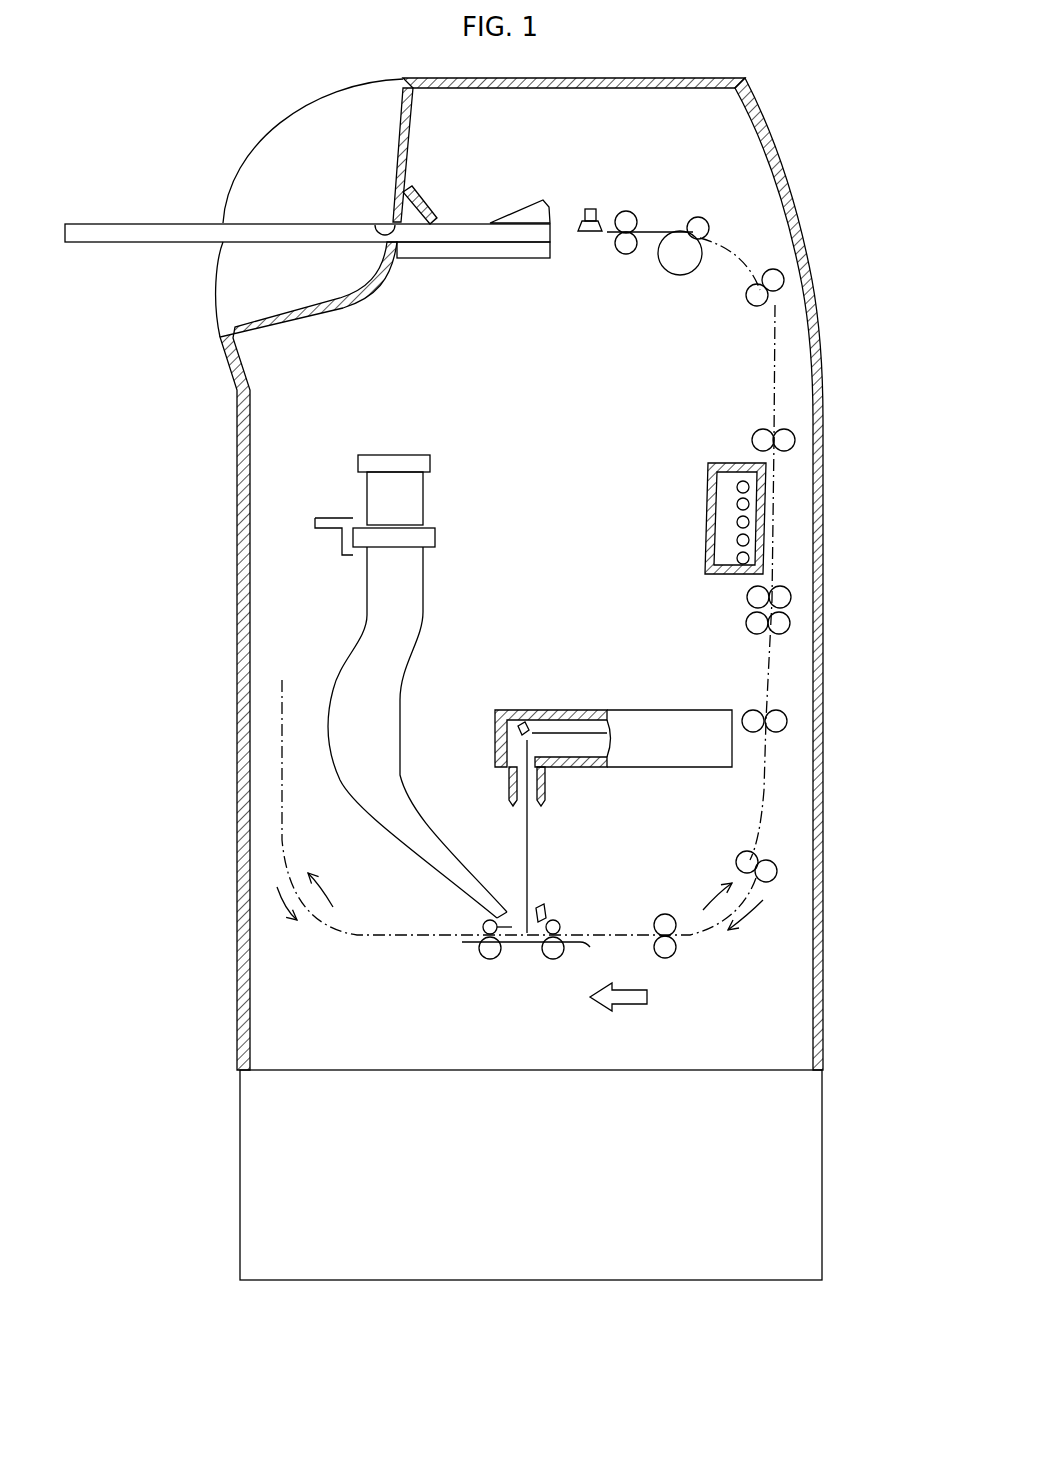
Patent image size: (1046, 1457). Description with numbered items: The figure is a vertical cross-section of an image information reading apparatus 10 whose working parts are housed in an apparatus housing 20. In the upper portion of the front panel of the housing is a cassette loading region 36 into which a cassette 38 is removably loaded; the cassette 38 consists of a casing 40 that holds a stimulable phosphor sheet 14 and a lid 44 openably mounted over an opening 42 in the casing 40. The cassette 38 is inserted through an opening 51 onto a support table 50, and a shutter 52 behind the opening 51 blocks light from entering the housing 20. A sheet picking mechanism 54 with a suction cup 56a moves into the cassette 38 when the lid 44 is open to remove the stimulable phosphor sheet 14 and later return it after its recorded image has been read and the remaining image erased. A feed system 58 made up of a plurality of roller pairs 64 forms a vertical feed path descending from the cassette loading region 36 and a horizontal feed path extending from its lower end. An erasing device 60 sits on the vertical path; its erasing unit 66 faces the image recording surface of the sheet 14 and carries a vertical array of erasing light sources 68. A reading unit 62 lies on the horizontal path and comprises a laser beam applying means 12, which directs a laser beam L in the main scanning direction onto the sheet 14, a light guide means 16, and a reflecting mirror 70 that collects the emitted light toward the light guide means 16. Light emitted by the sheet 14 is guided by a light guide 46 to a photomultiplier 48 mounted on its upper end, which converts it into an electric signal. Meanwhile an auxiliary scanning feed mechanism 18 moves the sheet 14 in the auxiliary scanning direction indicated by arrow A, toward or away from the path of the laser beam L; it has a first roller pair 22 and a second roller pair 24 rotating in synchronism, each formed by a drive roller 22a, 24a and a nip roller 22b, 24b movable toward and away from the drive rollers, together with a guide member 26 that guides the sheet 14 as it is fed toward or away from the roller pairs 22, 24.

The image information reading apparatus 10 is at (225, 105).
The laser beam applying means 12 is at (645, 720).
The stimulable phosphor sheet 14 is at (772, 358).
The light guide means 16 is at (370, 455).
The auxiliary scanning feed mechanism 18 is at (572, 852).
The apparatus housing 20 is at (232, 1105).
The first roller pair 22 is at (610, 885).
The drive roller 22a is at (553, 952).
The nip roller 22b is at (562, 925).
The second roller pair 24 is at (395, 893).
The drive roller 24a is at (490, 952).
The nip roller 24b is at (488, 925).
The guide member 26 is at (520, 944).
The cassette loading region 36 is at (350, 213).
The cassette 38 is at (162, 236).
The casing 40 is at (258, 240).
The opening 42 is at (552, 224).
The lid 44 is at (520, 207).
The light guide 46 is at (385, 602).
The photomultiplier 48 is at (410, 507).
The support table 50 is at (495, 259).
The opening 51 is at (385, 222).
The shutter 52 is at (422, 208).
The sheet picking mechanism 54 is at (567, 192).
The suction cup 56a is at (592, 208).
The feed system 58 is at (740, 242).
The erasing device 60 is at (722, 455).
The reading unit 62 is at (486, 706).
The roller pairs 64 is at (755, 297).
The erasing unit 66 is at (712, 510).
The erasing light sources 68 is at (740, 487).
The reflecting mirror 70 is at (545, 912).
The laser beam L is at (527, 822).
The arrow A is at (618, 1012).